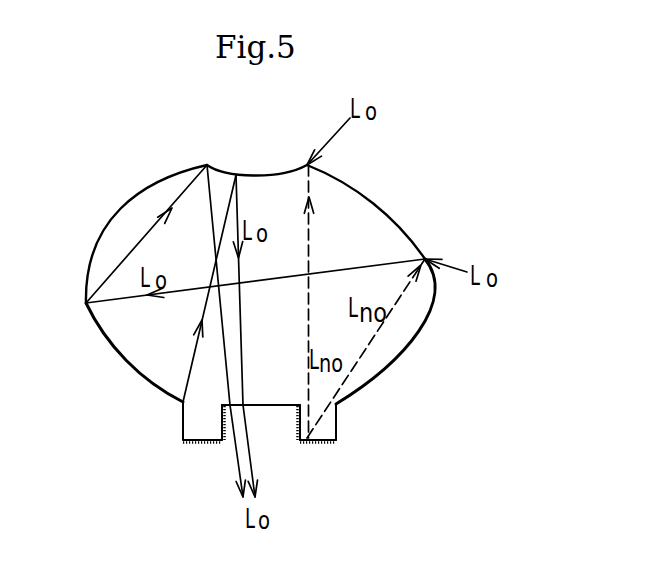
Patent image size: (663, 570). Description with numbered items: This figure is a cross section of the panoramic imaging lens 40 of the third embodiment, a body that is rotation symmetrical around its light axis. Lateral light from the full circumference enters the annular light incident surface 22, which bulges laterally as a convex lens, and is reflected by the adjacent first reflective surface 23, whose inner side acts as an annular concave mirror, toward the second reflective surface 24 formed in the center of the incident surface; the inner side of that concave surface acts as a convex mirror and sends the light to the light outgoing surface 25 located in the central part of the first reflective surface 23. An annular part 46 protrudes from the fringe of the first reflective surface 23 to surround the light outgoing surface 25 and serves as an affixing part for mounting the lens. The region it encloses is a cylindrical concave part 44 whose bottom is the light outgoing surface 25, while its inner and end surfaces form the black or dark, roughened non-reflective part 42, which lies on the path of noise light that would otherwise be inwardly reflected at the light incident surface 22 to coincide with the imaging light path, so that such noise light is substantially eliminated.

The panoramic imaging lens 40 is at (393, 170).
The light incident surface 22 is at (402, 225).
The first reflective surface 23 is at (423, 327).
The second reflective surface 24 is at (263, 173).
The light outgoing surface 25 is at (272, 405).
The non-reflective part 42 is at (300, 422).
The cylindrical concave part 44 is at (263, 432).
The annular part 46 is at (336, 428).